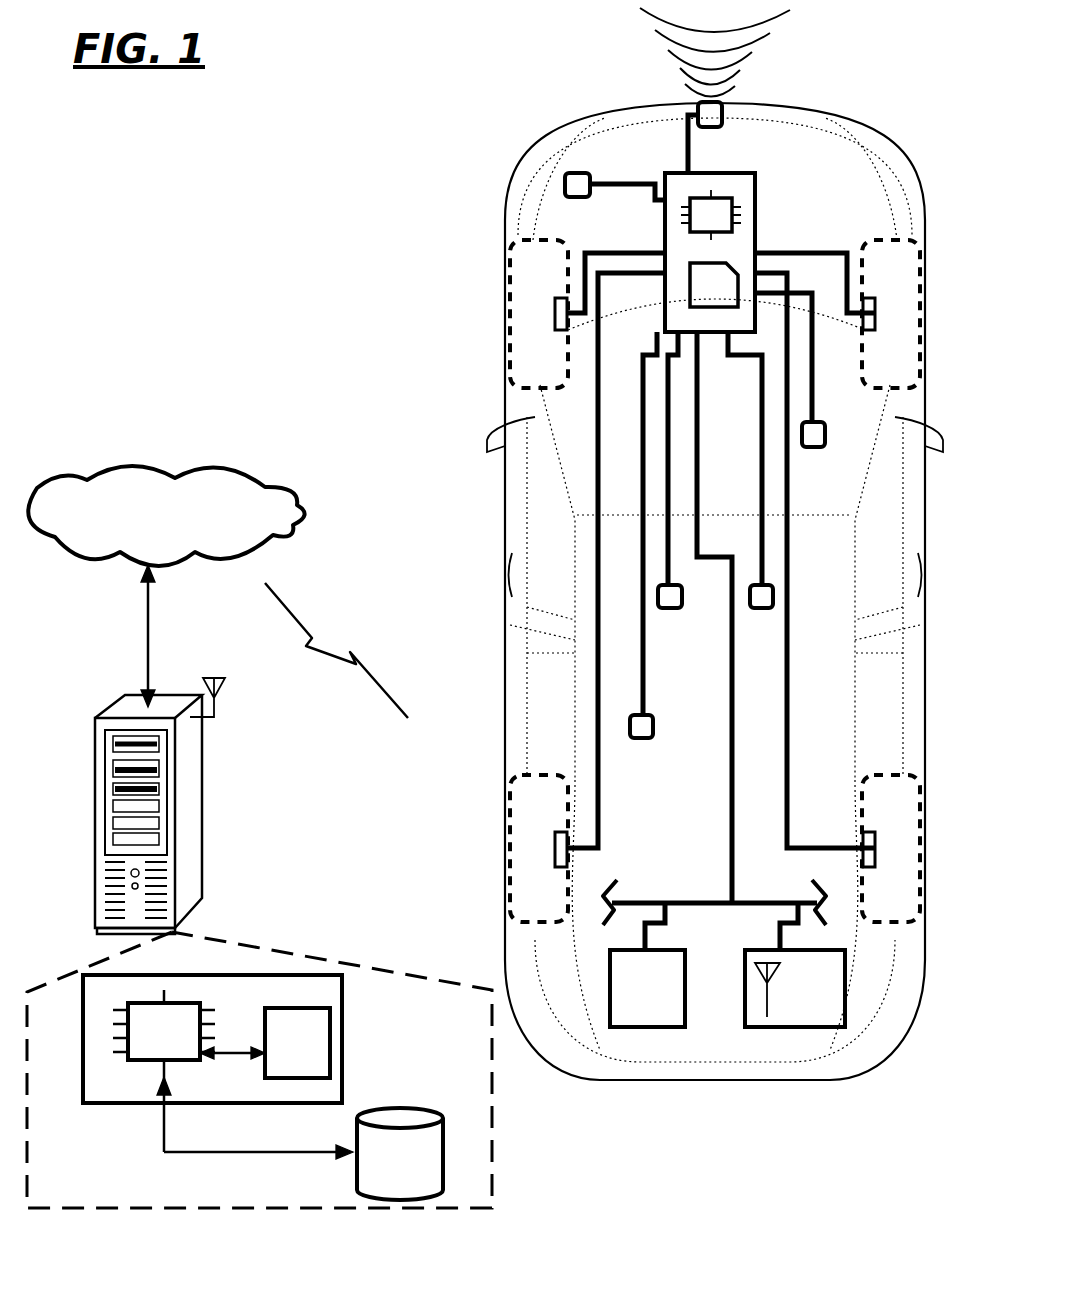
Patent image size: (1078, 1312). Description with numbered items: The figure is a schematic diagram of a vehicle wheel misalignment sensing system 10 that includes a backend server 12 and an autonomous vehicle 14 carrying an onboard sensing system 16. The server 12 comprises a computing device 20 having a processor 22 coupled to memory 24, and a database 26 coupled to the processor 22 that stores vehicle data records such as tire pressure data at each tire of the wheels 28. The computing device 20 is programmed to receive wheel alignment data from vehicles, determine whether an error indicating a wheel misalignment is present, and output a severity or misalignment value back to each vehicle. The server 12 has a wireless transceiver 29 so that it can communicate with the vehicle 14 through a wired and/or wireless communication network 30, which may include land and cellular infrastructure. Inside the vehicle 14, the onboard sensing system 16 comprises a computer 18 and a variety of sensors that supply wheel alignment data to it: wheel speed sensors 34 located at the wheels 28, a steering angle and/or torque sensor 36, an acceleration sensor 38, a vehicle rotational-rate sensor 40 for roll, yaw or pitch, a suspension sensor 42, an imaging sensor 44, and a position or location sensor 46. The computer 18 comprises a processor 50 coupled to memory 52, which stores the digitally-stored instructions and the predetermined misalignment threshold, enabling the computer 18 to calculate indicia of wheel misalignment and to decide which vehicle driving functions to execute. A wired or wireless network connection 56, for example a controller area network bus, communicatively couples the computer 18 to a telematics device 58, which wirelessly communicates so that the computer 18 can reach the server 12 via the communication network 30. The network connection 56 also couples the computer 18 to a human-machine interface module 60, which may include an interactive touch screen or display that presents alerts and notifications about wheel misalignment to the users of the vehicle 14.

The vehicle wheel misalignment sensing system 10 is at (246, 328).
The backend server 12 is at (130, 708).
The autonomous vehicle 14 is at (500, 364).
The onboard sensing system 16 is at (628, 158).
The computer 18 is at (758, 202).
The computing device 20 is at (342, 1039).
The processor 22 is at (164, 1025).
The memory 24 is at (297, 1043).
The database 26 is at (300, 1131).
The wheels 28 is at (506, 268).
The wireless transceiver 29 is at (228, 684).
The communication network 30 is at (166, 516).
The wheel speed sensor 34 is at (558, 300).
The steering angle and/or torque sensor 36 is at (654, 727).
The acceleration sensor 38 is at (672, 609).
The vehicle rotational-rate sensor 40 is at (760, 609).
The suspension sensor 42 is at (826, 432).
The imaging sensor 44 is at (727, 113).
The position or location sensor 46 is at (580, 198).
The processor 50 is at (711, 215).
The memory 52 is at (714, 285).
The network connection 56 is at (692, 892).
The telematics device 58 is at (795, 988).
The human-machine interface module 60 is at (647, 988).